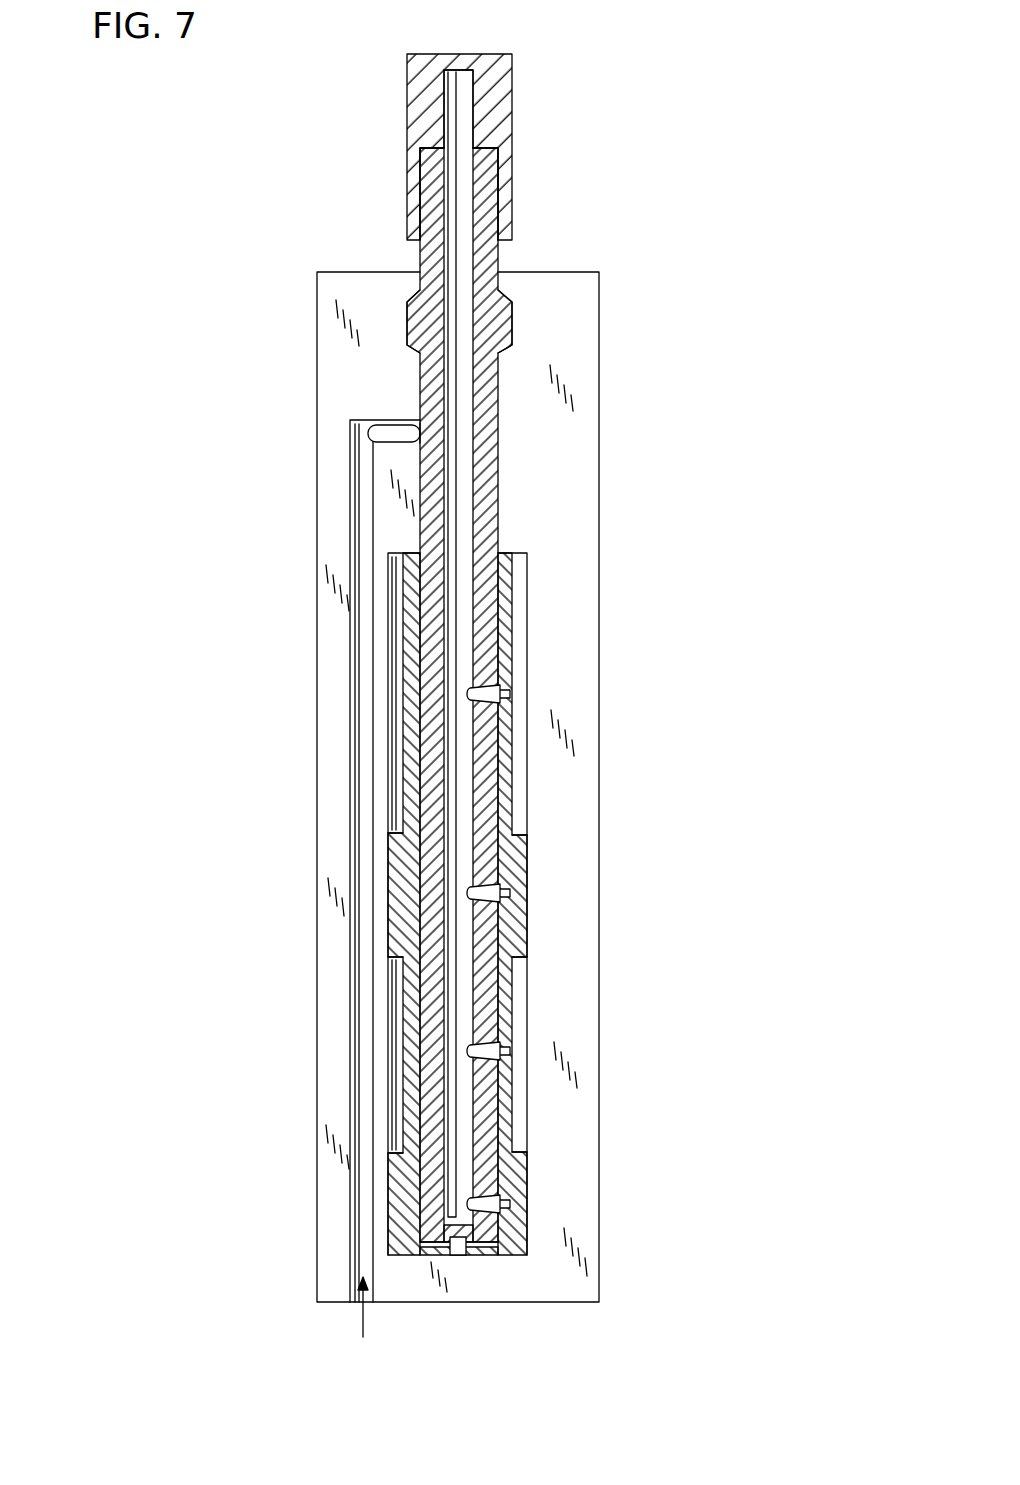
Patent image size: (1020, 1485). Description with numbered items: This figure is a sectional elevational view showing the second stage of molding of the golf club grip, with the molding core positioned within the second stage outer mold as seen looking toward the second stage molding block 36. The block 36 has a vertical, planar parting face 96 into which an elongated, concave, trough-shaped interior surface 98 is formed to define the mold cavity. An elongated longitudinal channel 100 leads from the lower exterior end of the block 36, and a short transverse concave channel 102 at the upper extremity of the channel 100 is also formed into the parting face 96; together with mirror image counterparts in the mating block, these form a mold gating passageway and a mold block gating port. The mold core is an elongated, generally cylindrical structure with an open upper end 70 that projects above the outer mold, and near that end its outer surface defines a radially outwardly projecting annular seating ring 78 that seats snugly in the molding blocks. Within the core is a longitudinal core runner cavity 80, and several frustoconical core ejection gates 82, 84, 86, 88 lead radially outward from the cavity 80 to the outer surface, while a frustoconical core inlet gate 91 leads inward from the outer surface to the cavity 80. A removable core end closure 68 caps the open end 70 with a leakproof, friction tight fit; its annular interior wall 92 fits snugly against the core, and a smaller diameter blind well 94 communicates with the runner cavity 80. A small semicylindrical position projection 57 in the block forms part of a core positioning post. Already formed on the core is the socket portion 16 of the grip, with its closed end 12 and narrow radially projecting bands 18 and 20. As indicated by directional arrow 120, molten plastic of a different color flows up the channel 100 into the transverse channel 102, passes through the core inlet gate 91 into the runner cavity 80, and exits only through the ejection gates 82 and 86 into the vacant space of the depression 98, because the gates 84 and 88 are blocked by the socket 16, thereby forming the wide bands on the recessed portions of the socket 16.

The closed end 12 is at (503, 1257).
The socket portion 16 is at (398, 1081).
The narrow band 18 is at (527, 1213).
The narrow band 20 is at (530, 908).
The second stage molding block 36 is at (614, 475).
The position projection 57 is at (457, 1255).
The core end closure 68 is at (398, 97).
The open upper end 70 is at (420, 262).
The seating ring 78 is at (512, 322).
The core runner cavity 80 is at (460, 1102).
The core ejection gate 82 is at (492, 684).
The core ejection gate 84 is at (494, 886).
The core ejection gate 86 is at (496, 1044).
The core ejection gate 88 is at (496, 1196).
The core inlet gate 91 is at (428, 430).
The annular interior wall 92 is at (500, 181).
The blind well 94 is at (478, 88).
The parting face 96 is at (563, 375).
The interior surface 98 is at (526, 618).
The longitudinal channel 100 is at (362, 935).
The transverse concave channel 102 is at (397, 432).
The directional arrow 120 is at (362, 1327).